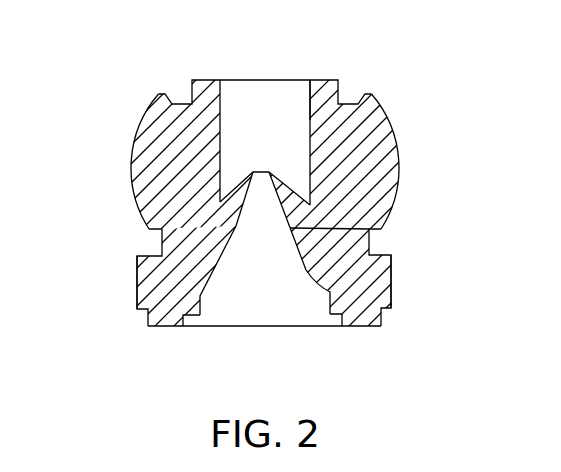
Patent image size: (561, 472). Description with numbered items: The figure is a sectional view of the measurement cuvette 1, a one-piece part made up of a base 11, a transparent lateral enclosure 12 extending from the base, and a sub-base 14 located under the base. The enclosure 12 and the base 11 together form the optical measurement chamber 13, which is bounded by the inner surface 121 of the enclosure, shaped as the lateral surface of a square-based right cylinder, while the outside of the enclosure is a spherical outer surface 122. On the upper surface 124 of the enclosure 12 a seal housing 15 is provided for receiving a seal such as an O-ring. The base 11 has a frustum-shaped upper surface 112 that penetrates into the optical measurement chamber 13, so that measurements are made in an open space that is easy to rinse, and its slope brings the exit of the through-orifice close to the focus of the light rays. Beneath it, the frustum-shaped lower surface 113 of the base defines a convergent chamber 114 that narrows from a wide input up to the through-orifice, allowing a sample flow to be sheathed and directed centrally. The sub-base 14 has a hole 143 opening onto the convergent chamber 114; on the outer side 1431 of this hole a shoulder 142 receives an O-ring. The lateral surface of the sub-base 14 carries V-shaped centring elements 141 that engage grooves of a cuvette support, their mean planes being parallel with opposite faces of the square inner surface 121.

The measurement cuvette 1 is at (465, 88).
The base 11 is at (290, 210).
The transparent lateral enclosure 12 is at (340, 174).
The optical measurement chamber 13 is at (258, 98).
The sub-base 14 is at (391, 288).
The seal housing 15 is at (176, 76).
The upper surface 112 is at (281, 188).
The lower surface 113 is at (251, 210).
The convergent chamber 114 is at (264, 247).
The inner surface 121 is at (310, 100).
The spherical outer surface 122 is at (133, 162).
The upper surface 124 is at (337, 78).
The V-shaped centring elements 141 is at (137, 283).
The shoulder 142 is at (190, 322).
The hole 143 is at (304, 303).
The outer side 1431 is at (279, 320).